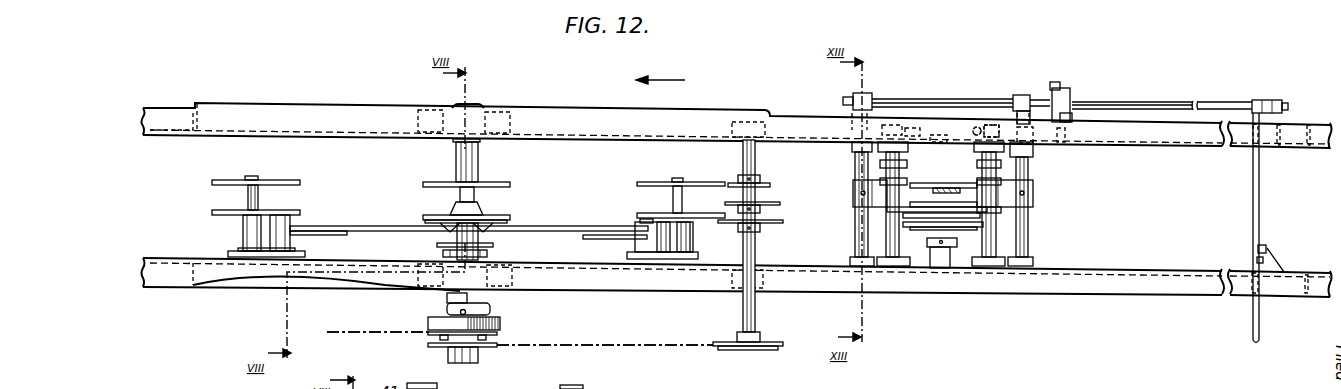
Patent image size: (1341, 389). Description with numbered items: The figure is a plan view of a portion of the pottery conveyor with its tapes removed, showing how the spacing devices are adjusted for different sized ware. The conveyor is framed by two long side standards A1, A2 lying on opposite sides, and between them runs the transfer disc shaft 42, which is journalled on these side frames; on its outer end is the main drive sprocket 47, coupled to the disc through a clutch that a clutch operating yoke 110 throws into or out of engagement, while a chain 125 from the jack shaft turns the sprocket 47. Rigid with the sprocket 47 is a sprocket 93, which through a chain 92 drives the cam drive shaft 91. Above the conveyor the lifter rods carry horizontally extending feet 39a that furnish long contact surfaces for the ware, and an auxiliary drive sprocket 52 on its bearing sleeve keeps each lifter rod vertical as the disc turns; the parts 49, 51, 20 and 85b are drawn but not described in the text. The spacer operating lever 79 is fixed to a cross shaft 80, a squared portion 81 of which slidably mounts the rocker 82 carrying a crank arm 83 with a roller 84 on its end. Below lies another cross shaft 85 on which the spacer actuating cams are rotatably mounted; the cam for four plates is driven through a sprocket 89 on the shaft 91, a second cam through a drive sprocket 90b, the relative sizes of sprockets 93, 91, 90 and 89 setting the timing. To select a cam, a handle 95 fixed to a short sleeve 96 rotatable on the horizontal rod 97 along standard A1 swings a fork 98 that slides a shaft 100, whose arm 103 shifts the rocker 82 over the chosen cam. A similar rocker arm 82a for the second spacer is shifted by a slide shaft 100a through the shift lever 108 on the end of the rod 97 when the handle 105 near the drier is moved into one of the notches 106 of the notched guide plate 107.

The side standard A1 is at (236, 108).
The side standard A2 is at (183, 279).
The foot 39a is at (268, 179).
The shaft 42 is at (460, 158).
The bracket 49 is at (257, 242).
The plate 51 is at (494, 246).
The auxiliary drive sprocket 52 is at (447, 251).
The bar 20 is at (552, 229).
The clutch operating yoke 110 is at (490, 310).
The drive sprocket 47 is at (486, 336).
The sprocket 93 is at (486, 348).
The chain 125 is at (352, 332).
The chain 92 is at (600, 346).
The sprocket 90 is at (760, 183).
The drive sprocket 90b is at (766, 203).
The drive shaft 91 is at (757, 312).
The slide shaft 100a is at (855, 171).
The bearing block 85b is at (815, 203).
The roller 84 is at (923, 186).
The crank arm 83 is at (957, 192).
The sprocket 89 is at (960, 186).
The rocker arm 82a is at (887, 213).
The cross shaft 85 is at (944, 268).
The squared portion 81 is at (1020, 180).
The arm 103 is at (1026, 193).
The rocker 82 is at (1006, 229).
The sliding shaft 100 is at (1022, 242).
The spacer operating lever 79 is at (976, 127).
The cross shaft 80 is at (993, 125).
The shift lever 108 is at (868, 98).
The rod 97 is at (1113, 103).
The sleeve 96 is at (1043, 95).
The handle 95 is at (1055, 83).
The fork 98 is at (1032, 108).
The handle 105 is at (1252, 210).
The notch 106 is at (1263, 250).
The notched guide plate 107 is at (1279, 268).